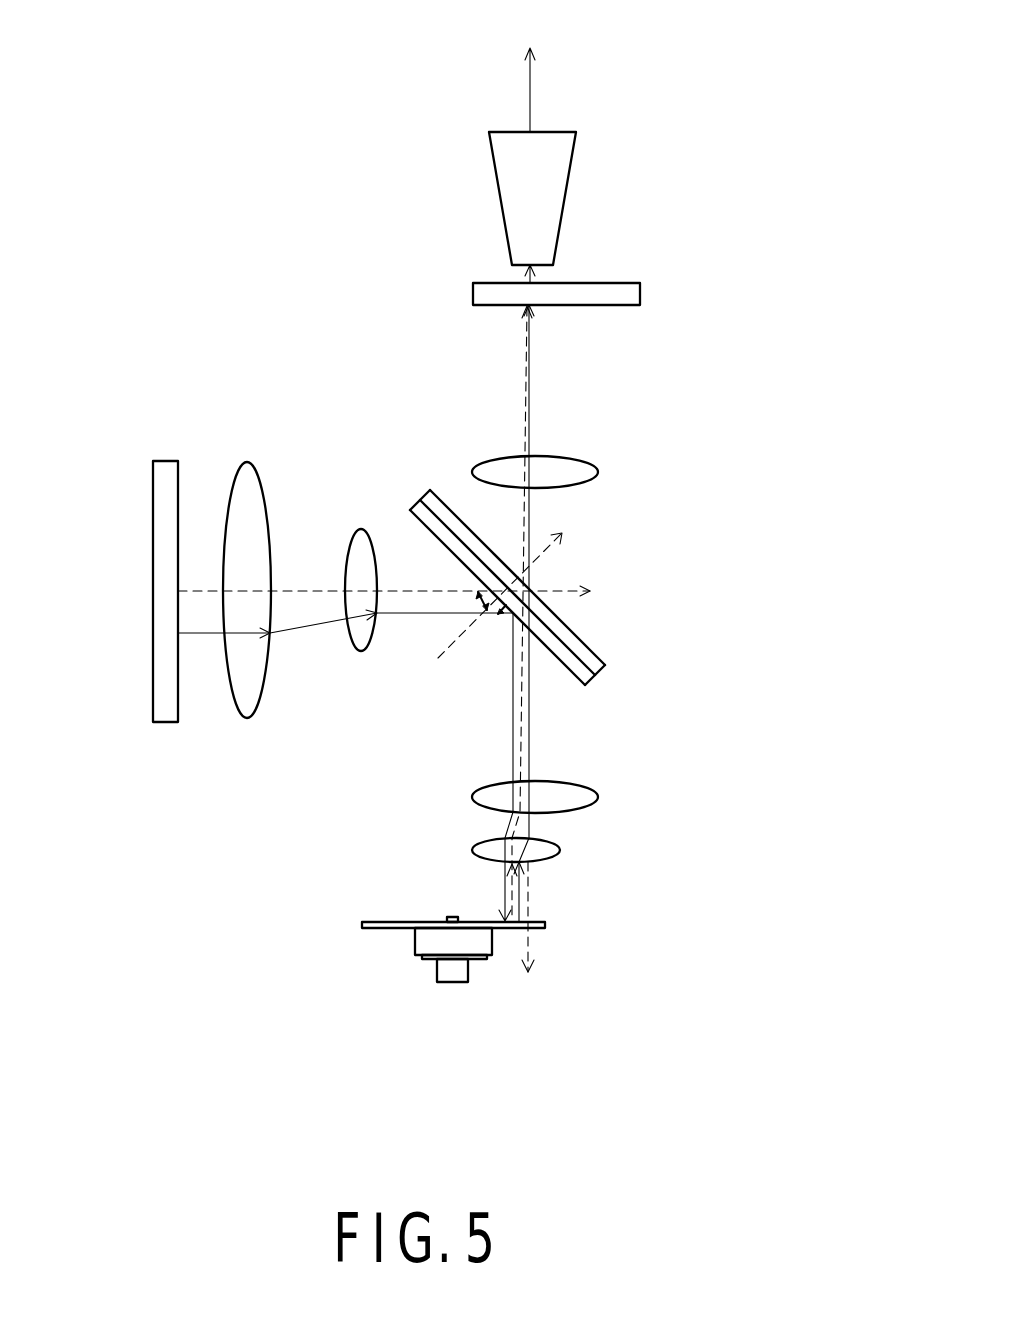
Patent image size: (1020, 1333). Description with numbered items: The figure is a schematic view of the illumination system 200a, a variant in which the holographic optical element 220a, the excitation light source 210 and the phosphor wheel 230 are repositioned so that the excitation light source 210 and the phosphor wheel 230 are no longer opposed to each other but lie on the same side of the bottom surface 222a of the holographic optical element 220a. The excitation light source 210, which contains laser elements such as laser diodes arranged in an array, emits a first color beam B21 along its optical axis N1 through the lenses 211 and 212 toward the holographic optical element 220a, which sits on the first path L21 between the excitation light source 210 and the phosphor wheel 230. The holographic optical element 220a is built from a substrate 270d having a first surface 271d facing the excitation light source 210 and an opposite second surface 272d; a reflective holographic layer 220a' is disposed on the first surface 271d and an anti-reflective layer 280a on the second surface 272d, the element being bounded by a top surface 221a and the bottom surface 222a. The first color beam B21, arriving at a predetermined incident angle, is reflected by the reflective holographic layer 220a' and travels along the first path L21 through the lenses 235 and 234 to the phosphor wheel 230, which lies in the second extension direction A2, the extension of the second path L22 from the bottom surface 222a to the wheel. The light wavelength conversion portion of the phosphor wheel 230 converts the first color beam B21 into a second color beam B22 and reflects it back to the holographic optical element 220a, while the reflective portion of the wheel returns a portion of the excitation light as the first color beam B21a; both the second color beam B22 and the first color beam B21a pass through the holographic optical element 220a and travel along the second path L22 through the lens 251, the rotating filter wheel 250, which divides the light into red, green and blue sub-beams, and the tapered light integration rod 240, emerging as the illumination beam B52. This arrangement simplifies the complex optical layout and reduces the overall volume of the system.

The illumination system 200a is at (128, 39).
The excitation light source 210 is at (164, 472).
The lens 211 is at (247, 712).
The lens 212 is at (362, 652).
The holographic optical element 220a is at (540, 553).
The reflective holographic layer 220a' is at (336, 453).
The first surface 221a is at (574, 654).
The bottom surface 222a is at (557, 673).
The anti-reflective layer 280a is at (605, 665).
The substrate 270d is at (418, 508).
The first surface 271d is at (430, 522).
The second surface 272d is at (440, 495).
The phosphor wheel 230 is at (385, 925).
The lens 234 is at (493, 850).
The lens 235 is at (495, 795).
The light integration rod 240 is at (545, 170).
The filter wheel 250 is at (618, 295).
The lens 251 is at (570, 473).
The first color beam B21 is at (202, 633).
The first color beam B21a is at (520, 828).
The second color beam B22 is at (533, 742).
The output illumination beam B52 is at (533, 90).
The first path L21 is at (503, 742).
The second path L22 is at (550, 415).
The optical axis N1 is at (568, 590).
The second extension direction A2 is at (530, 948).